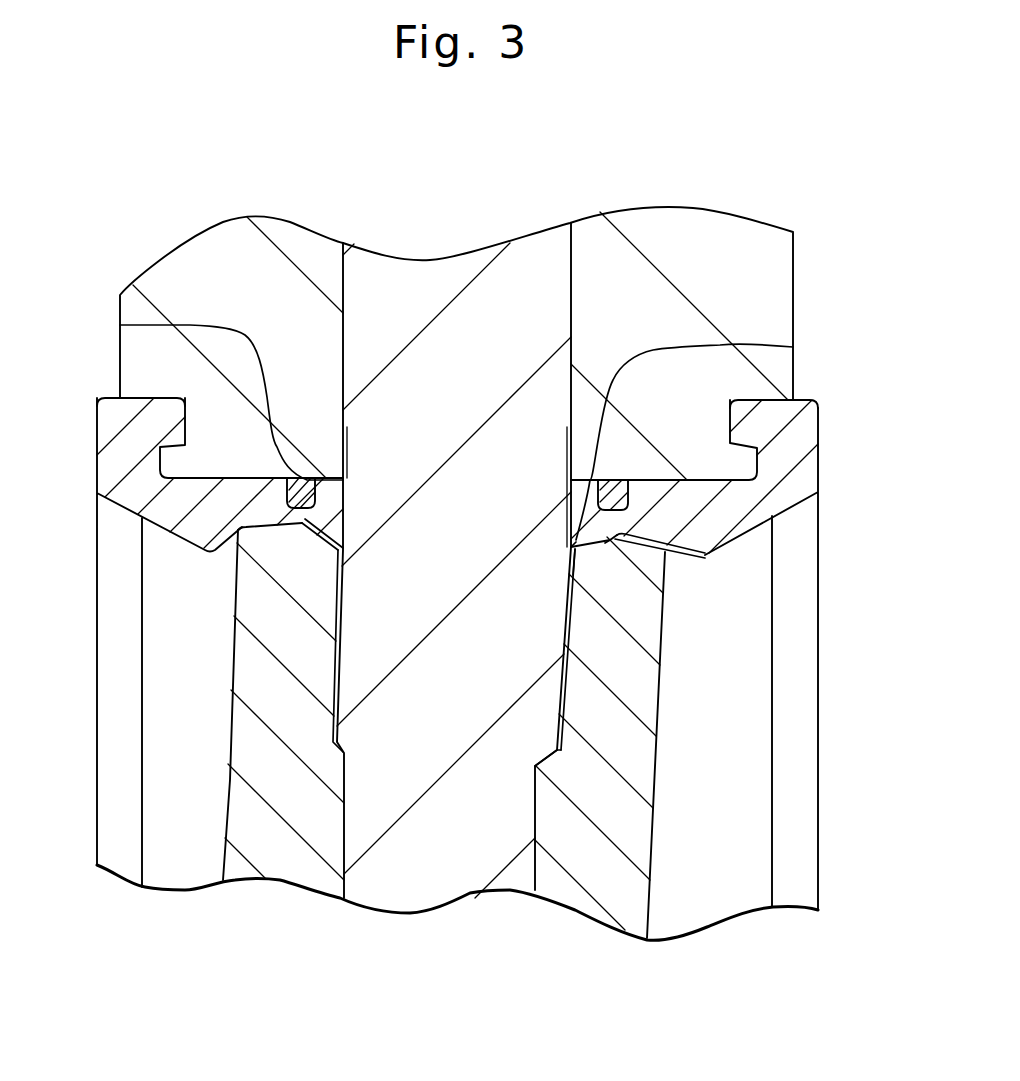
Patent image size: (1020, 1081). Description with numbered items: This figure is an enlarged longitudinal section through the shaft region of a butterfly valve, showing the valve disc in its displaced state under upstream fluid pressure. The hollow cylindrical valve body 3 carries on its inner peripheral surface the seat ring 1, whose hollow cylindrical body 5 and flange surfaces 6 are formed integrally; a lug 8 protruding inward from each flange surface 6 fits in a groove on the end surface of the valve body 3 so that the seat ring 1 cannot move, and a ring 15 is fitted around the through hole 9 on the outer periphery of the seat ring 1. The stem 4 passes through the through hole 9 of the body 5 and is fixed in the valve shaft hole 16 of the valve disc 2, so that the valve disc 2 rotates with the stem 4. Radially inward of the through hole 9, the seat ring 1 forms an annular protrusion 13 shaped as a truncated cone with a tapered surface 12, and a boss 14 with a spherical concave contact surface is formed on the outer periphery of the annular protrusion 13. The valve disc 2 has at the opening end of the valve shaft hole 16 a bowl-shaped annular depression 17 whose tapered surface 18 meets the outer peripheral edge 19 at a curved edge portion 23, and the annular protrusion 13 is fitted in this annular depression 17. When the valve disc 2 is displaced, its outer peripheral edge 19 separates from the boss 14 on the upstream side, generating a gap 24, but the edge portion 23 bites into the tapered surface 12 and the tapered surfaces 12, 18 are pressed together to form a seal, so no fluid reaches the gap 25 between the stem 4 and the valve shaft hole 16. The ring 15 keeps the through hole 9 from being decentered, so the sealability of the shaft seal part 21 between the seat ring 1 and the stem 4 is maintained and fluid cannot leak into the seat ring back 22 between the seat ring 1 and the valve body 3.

The seat ring 1 is at (777, 460).
The valve disc 2 is at (598, 870).
The valve body 3 is at (712, 247).
The stem 4 is at (480, 330).
The body 5 is at (173, 497).
The flange surfaces 6 is at (97, 458).
The lug 8 is at (170, 420).
The through hole 9 is at (793, 347).
The tapered surface 12 is at (605, 543).
The annular protrusion 13 is at (332, 538).
The boss 14 is at (655, 532).
The ring 15 is at (120, 325).
The valve shaft hole 16 is at (536, 819).
The annular depression 17 is at (310, 523).
The tapered surface 18 is at (573, 562).
The outer peripheral edge 19 is at (263, 527).
The shaft seal part 21 is at (347, 497).
The seat ring back 22 is at (583, 545).
The edge portion 23 is at (576, 542).
The gap 24 is at (705, 558).
The gap 25 is at (553, 717).